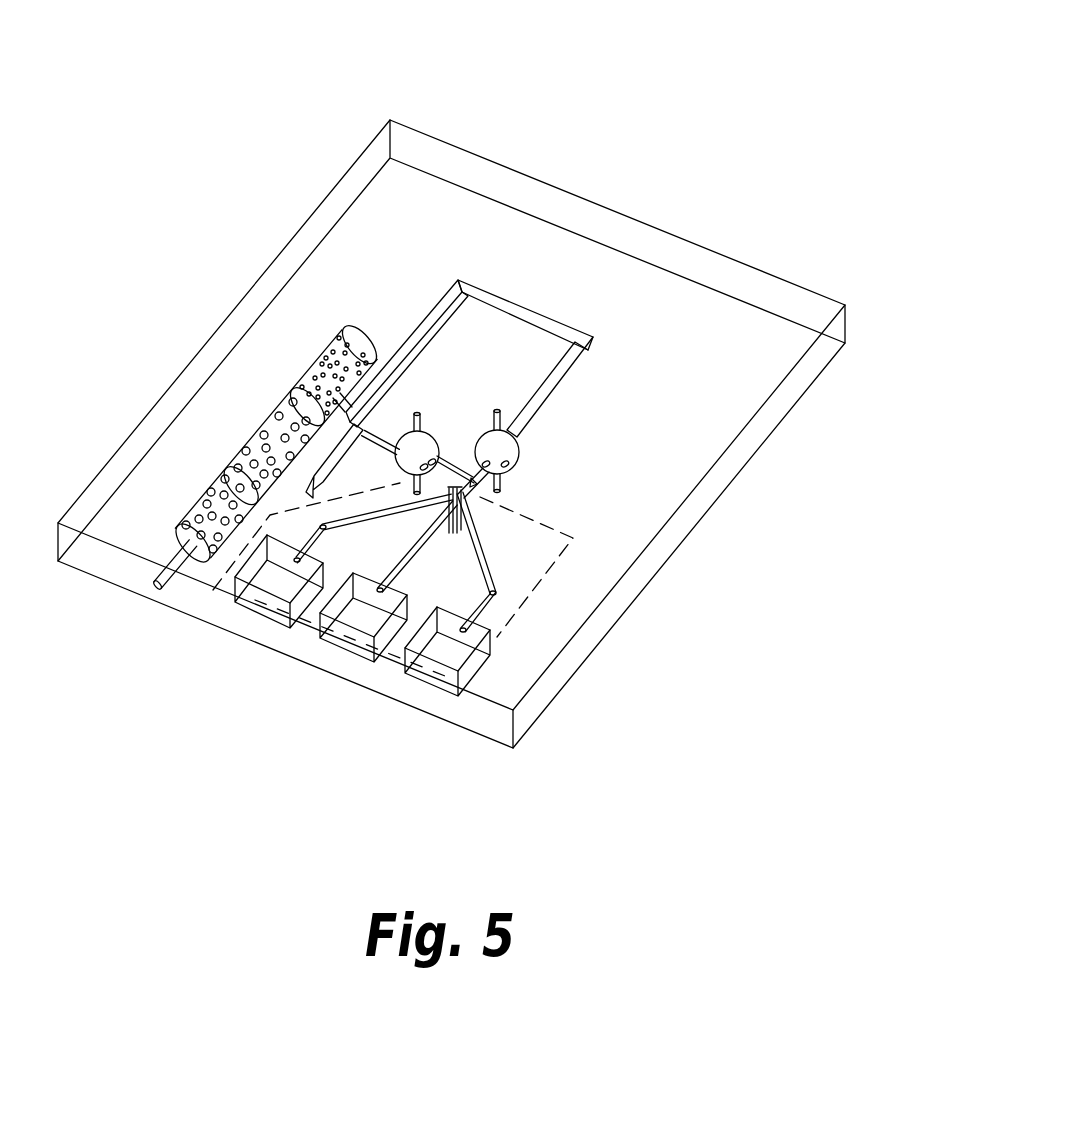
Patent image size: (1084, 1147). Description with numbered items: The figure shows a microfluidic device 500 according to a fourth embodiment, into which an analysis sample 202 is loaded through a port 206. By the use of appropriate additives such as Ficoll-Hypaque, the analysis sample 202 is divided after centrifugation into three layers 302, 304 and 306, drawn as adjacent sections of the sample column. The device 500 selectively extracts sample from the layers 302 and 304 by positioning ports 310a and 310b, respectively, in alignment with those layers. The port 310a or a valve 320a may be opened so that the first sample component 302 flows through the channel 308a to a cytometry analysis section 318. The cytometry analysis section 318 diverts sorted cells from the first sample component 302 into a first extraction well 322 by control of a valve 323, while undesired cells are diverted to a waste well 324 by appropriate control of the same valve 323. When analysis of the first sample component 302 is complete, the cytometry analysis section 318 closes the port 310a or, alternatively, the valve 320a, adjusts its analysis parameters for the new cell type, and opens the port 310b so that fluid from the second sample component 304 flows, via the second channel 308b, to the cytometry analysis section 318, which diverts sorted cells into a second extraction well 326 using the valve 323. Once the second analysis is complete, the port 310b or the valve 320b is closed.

The device 500 is at (683, 70).
The analysis sample 202 is at (300, 377).
The port 206 is at (152, 597).
The layer 302 is at (337, 350).
The layer 304 is at (253, 440).
The layer 306 is at (217, 493).
The channel 308a is at (522, 308).
The channel 308b is at (463, 293).
The port 310a is at (363, 437).
The port 310b is at (273, 480).
The cytometry analysis section 318 is at (548, 526).
The valve 320a is at (520, 453).
The valve 320b is at (442, 442).
The first extraction well 322 is at (480, 655).
The valve 323 is at (520, 548).
The waste well 324 is at (257, 617).
The second extraction well 326 is at (343, 652).